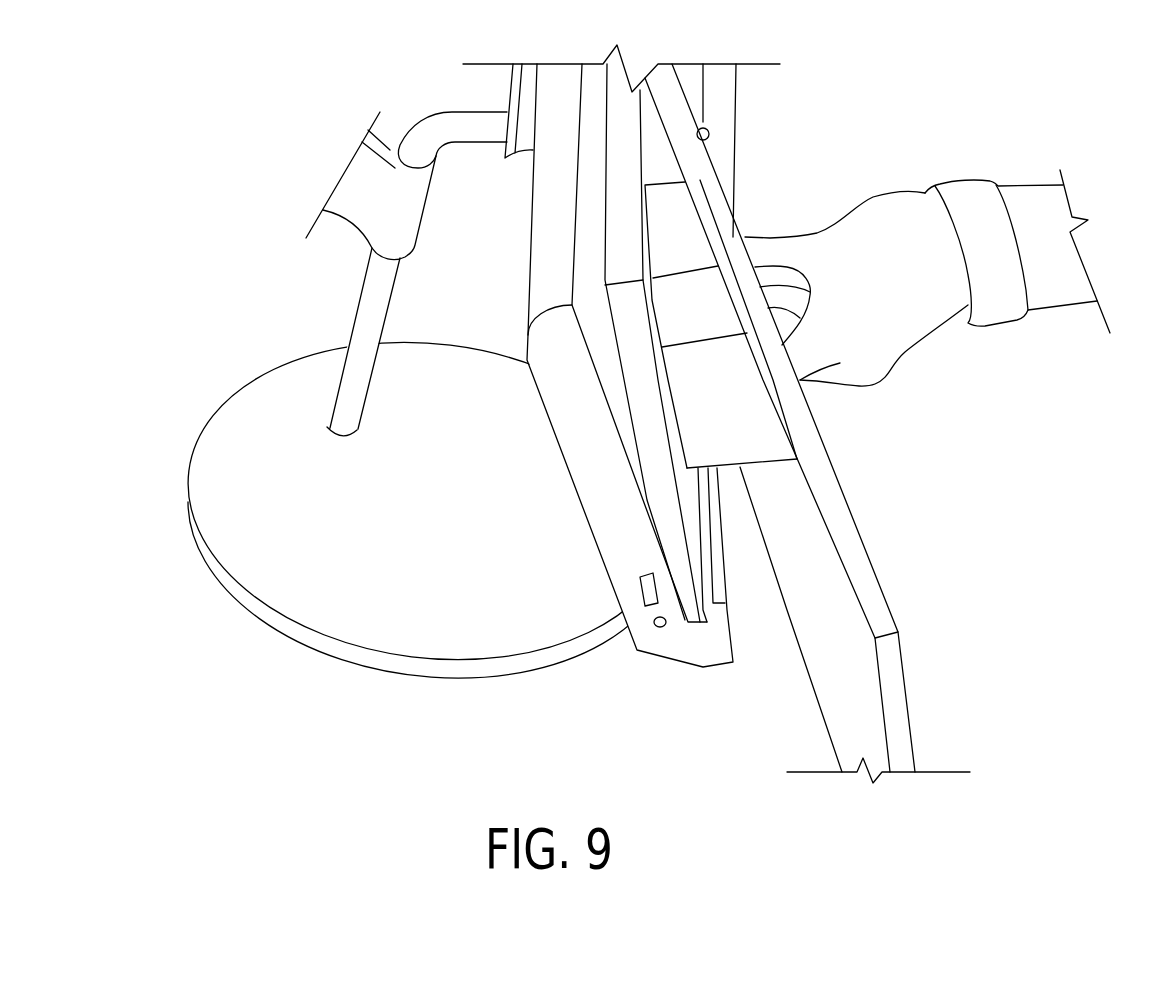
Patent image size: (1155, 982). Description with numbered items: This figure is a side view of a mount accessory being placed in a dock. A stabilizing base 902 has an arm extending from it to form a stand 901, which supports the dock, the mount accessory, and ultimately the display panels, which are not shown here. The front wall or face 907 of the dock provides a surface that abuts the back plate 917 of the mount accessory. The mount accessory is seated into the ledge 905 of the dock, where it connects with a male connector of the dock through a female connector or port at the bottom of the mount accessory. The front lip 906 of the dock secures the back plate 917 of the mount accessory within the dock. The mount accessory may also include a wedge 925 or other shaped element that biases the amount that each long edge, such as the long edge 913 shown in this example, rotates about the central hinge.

The stand 901 is at (311, 128).
The stabilizing base 902 is at (267, 407).
The ledge 905 is at (698, 624).
The front lip 906 is at (733, 652).
The front wall or face 907 is at (597, 257).
The long edge 913 is at (853, 553).
The back plate 917 is at (630, 213).
The wedge 925 is at (742, 405).